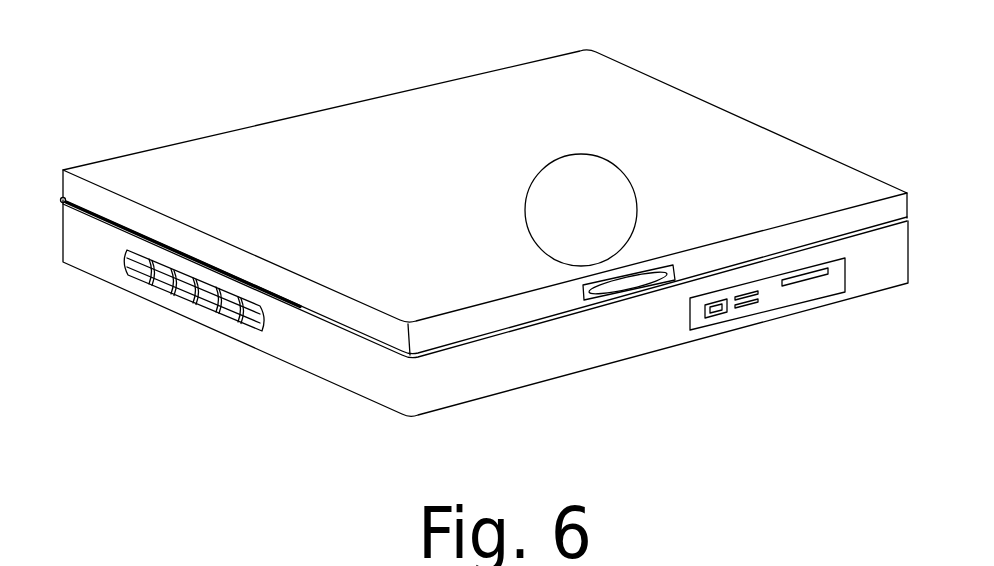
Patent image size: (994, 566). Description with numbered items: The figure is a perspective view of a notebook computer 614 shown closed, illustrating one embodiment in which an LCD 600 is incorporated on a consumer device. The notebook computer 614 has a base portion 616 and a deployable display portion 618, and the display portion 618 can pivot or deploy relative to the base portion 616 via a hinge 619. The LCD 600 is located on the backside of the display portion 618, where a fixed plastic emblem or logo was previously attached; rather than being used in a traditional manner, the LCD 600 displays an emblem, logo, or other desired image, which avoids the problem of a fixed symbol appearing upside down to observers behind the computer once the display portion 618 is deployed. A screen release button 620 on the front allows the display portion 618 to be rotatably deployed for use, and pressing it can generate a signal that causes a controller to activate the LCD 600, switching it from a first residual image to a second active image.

The LCD 600 is at (585, 153).
The notebook computer 614 is at (702, 62).
The base portion 616 is at (623, 362).
The display portion 618 is at (763, 148).
The hinge 619 is at (62, 203).
The screen release button 620 is at (629, 282).